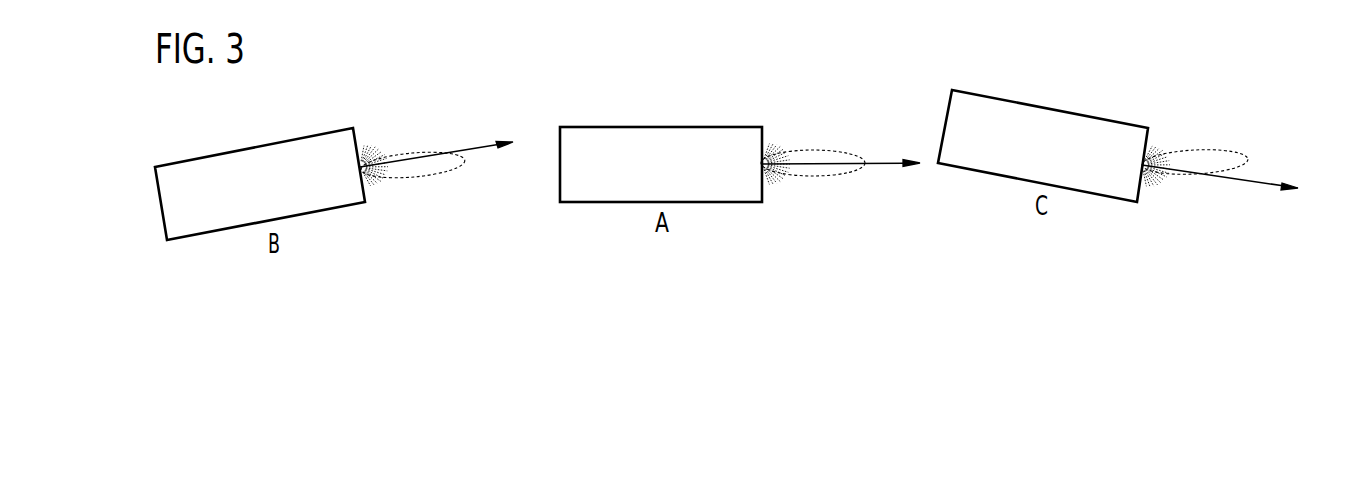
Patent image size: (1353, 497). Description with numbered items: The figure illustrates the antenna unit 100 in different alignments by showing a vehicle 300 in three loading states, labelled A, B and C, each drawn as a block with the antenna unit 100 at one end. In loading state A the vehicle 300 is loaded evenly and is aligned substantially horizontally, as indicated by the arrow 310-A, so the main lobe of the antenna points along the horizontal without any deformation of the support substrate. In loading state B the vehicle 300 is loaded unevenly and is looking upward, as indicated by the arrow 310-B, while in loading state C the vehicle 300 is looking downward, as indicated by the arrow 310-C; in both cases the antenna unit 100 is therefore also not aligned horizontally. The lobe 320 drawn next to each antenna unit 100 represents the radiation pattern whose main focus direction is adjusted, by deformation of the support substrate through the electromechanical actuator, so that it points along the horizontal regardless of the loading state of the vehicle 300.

The vehicle 300 is at (250, 147).
The antenna unit 100 is at (367, 203).
The arrow 310-A is at (880, 160).
The arrow 310-B is at (470, 147).
The arrow 310-C is at (1262, 180).
The light distribution pattern 320 is at (452, 178).